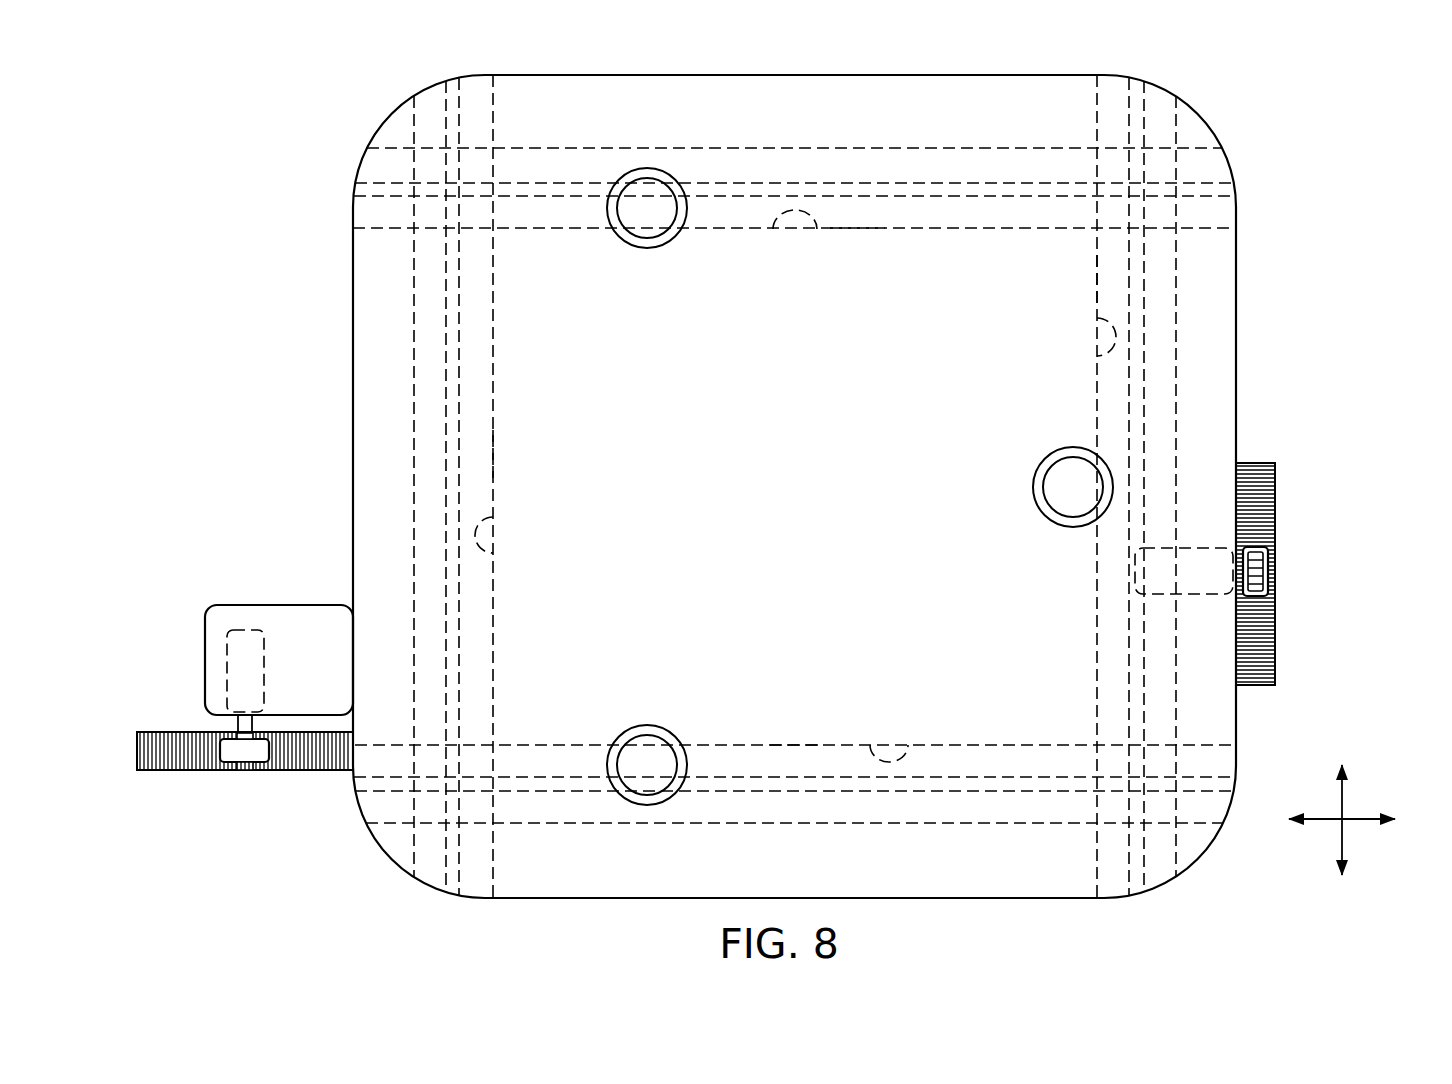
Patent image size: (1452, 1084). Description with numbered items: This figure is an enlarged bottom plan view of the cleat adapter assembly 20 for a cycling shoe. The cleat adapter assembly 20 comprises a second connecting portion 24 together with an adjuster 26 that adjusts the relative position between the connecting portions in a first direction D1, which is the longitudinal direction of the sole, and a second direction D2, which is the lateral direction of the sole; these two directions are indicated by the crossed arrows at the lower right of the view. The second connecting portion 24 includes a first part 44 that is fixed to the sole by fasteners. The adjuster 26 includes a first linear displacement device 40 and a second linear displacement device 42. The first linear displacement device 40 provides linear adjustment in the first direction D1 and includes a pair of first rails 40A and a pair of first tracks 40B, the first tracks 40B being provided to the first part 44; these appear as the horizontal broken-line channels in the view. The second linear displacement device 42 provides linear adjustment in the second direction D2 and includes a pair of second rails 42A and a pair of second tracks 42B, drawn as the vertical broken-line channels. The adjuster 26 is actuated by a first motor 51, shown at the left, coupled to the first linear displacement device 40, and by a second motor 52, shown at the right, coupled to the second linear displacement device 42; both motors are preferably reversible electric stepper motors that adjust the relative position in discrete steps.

The cleat adapter assembly 20 is at (1300, 191).
The second connecting portion 24 is at (1242, 348).
The adjuster 26 is at (1300, 528).
The first linear displacement device 40 is at (783, 146).
The first rails 40A is at (857, 230).
The first tracks 40B is at (774, 230).
The second linear displacement device 42 is at (1192, 406).
The second rails 42A is at (1097, 280).
The second tracks 42B is at (1097, 356).
The first part 44 is at (952, 116).
The first motor 51 is at (236, 600).
The second motor 52 is at (1204, 598).
The first direction D1 is at (1360, 821).
The second direction D2 is at (1343, 799).